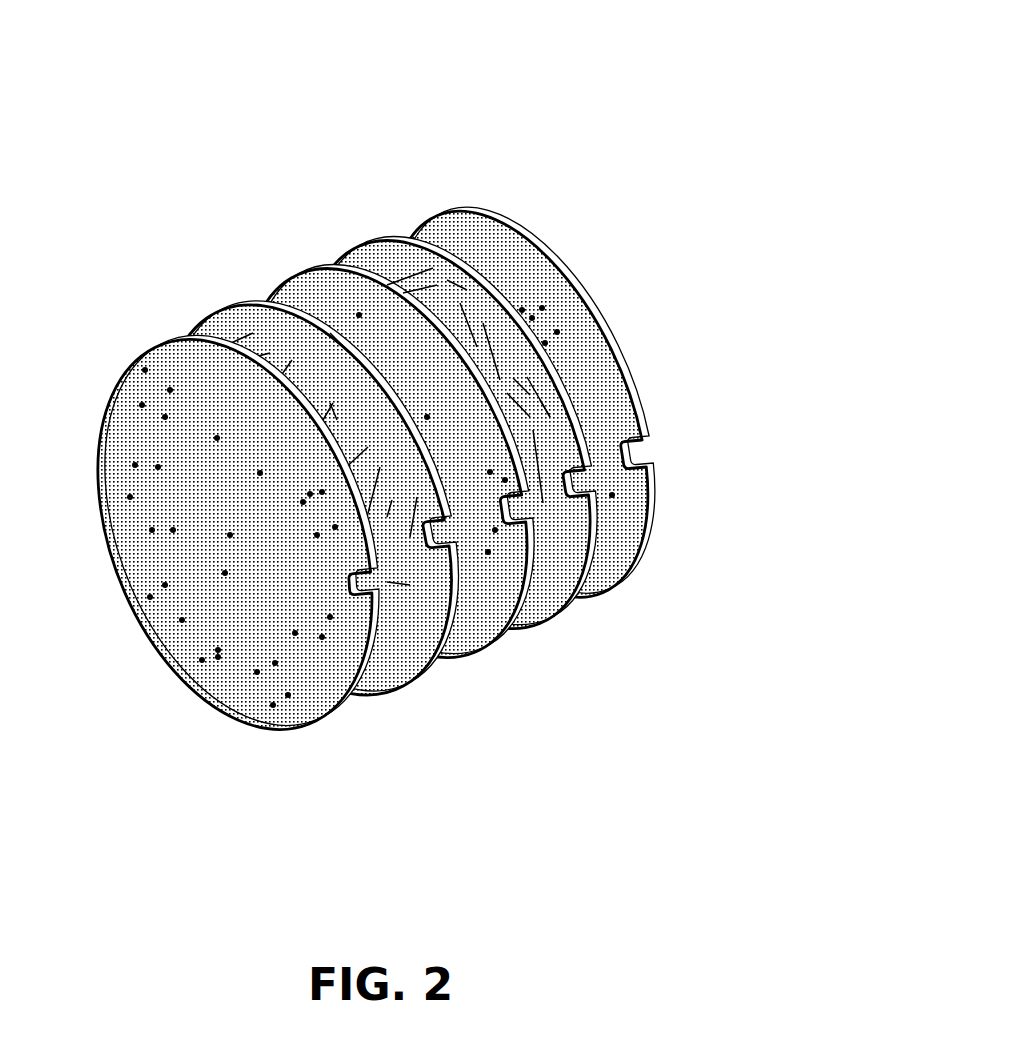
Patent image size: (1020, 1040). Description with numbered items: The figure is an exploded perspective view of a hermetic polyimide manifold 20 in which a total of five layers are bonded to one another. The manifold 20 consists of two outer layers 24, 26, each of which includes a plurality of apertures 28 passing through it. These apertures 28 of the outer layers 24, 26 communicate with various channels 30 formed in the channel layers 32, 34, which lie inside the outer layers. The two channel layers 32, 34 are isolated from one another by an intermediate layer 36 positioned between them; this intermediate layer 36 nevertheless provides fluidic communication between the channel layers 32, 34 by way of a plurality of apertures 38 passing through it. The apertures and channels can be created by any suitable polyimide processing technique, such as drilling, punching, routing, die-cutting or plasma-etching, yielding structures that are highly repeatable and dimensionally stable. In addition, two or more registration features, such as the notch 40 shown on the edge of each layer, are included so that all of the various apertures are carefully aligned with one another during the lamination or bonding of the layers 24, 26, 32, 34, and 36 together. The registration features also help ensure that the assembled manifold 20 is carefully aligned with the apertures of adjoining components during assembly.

The manifold 20 is at (604, 130).
The outer layer 24 is at (293, 730).
The outer layer 26 is at (598, 572).
The apertures 28 is at (612, 495).
The channels 30 is at (407, 677).
The channel layer 32 is at (425, 666).
The channel layer 34 is at (547, 623).
The intermediate layer 36 is at (293, 293).
The apertures 38 is at (359, 313).
The notch 40 is at (647, 442).